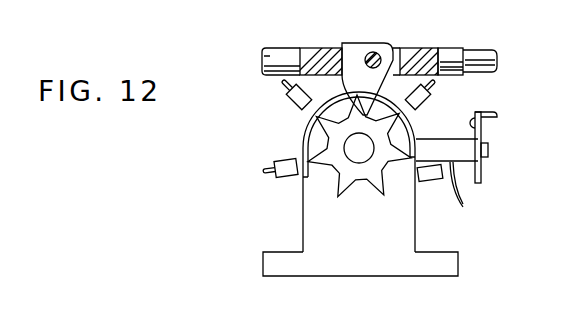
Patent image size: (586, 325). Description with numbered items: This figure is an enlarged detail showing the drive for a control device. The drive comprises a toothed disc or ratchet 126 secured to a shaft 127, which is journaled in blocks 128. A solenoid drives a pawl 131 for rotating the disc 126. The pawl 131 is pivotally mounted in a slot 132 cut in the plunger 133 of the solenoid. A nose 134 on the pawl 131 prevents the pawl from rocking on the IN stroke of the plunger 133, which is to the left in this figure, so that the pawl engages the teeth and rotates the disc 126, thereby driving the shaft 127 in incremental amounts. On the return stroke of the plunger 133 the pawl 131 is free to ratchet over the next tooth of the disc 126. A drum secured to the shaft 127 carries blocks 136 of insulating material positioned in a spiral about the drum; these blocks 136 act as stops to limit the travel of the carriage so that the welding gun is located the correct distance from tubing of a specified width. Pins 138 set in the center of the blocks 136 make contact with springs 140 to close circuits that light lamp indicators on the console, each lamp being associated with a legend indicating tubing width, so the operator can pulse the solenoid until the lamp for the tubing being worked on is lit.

The toothed disc 126 is at (334, 172).
The shaft 127 is at (350, 148).
The blocks 128 is at (413, 237).
The pawl 131 is at (358, 43).
The slot 132 is at (395, 47).
The plunger 133 is at (279, 50).
The nose 134 is at (352, 43).
The blocks 136 is at (292, 103).
The pins 138 is at (437, 91).
The springs 140 is at (466, 204).